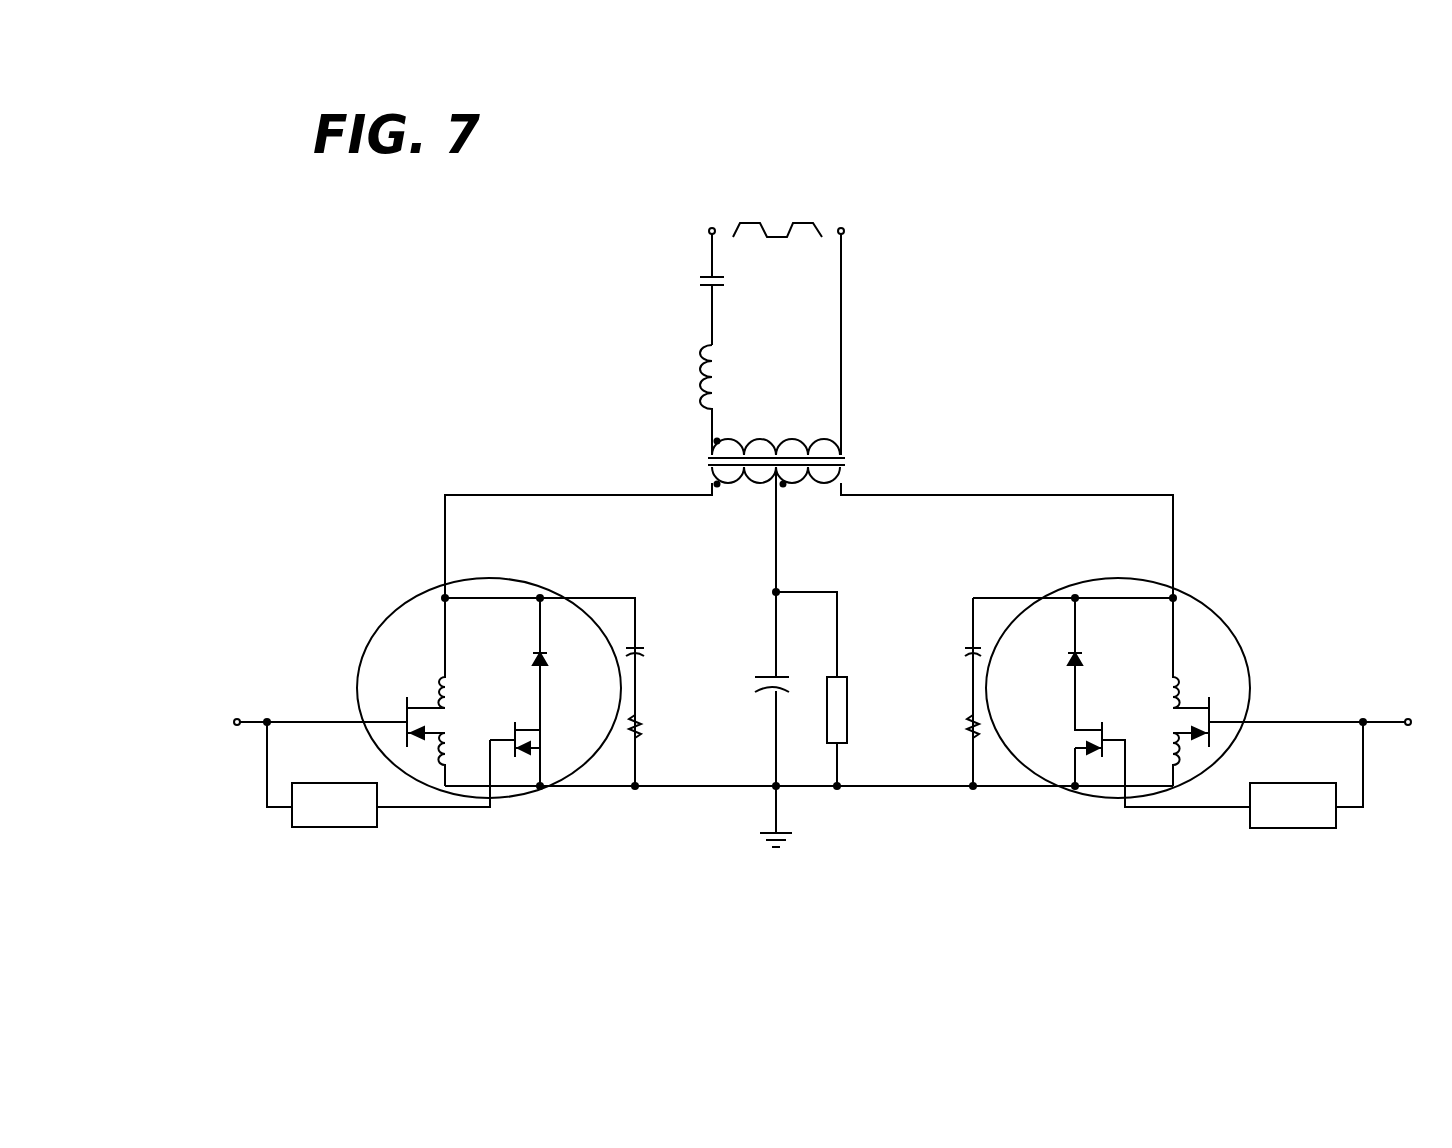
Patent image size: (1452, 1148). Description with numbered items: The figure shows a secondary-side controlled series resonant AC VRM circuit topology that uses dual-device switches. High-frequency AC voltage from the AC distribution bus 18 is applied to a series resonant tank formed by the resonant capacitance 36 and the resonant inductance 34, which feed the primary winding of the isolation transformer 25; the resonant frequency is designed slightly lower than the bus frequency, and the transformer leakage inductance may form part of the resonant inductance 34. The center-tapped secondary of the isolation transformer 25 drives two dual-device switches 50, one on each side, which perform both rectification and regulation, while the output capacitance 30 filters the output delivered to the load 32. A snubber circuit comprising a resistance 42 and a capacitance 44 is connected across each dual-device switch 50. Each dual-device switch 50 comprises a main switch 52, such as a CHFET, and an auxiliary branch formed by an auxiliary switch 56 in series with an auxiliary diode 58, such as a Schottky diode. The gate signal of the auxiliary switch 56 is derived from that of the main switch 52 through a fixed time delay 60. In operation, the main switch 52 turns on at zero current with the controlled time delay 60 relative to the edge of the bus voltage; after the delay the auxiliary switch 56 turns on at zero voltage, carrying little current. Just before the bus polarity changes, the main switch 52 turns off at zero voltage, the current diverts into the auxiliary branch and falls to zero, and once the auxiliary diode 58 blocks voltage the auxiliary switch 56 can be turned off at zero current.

The AC distribution bus 18 is at (789, 297).
The isolation transformer 25 is at (842, 460).
The output capacitance 30 is at (780, 675).
The load 32 is at (847, 690).
The resonant inductance 34 is at (687, 405).
The resonant capacitance 36 is at (716, 287).
The resistance 42 is at (640, 648).
The capacitance 44 is at (638, 718).
The dual-device switch 50 is at (383, 622).
The main switch 52 is at (1212, 715).
The auxiliary switch 56 is at (1103, 732).
The auxiliary diode 58 is at (1073, 665).
The time delay 60 is at (327, 827).